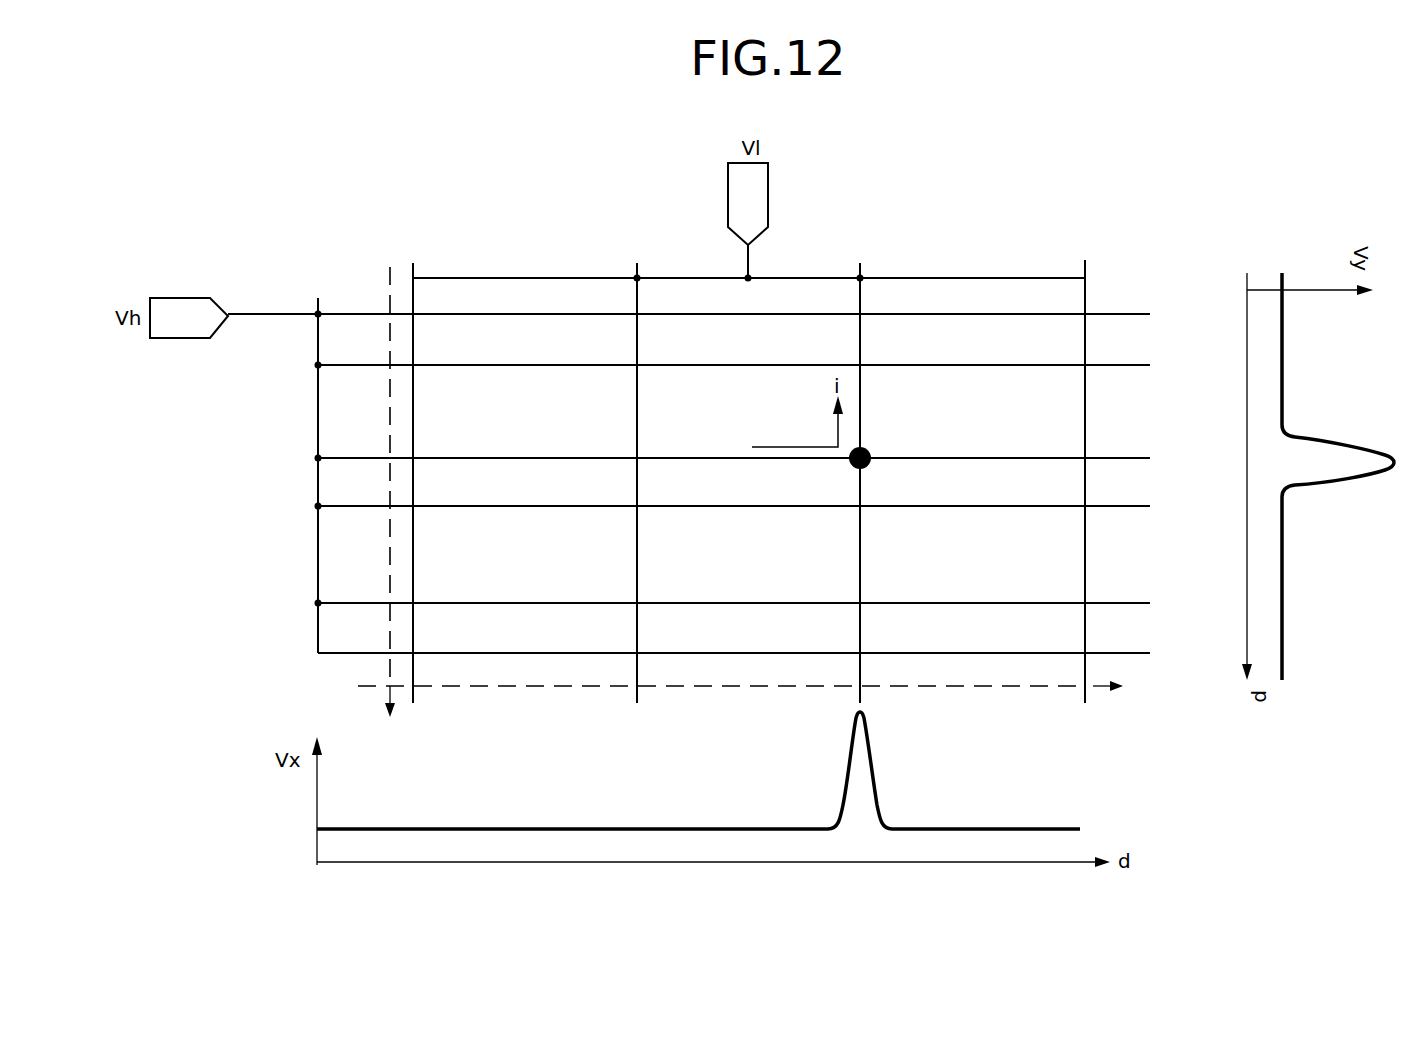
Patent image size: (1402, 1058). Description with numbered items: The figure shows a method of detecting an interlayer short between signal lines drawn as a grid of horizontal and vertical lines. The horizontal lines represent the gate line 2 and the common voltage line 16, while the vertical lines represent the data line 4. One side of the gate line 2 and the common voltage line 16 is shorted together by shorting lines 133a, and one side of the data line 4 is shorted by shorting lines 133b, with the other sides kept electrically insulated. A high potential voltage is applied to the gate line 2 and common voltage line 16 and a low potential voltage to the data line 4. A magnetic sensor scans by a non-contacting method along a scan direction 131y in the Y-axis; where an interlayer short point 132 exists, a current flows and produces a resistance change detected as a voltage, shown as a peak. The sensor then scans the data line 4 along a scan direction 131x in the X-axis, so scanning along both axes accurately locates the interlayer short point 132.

The gate line 2 is at (990, 314).
The common voltage line 16 is at (990, 365).
The data line 4 is at (413, 412).
The interlayer short point 132 is at (868, 451).
The shorting lines 133a is at (318, 405).
The shorting lines 133b is at (990, 278).
The scan direction in the X-axis 131x is at (770, 686).
The scan direction in the Y-axis 131y is at (392, 509).